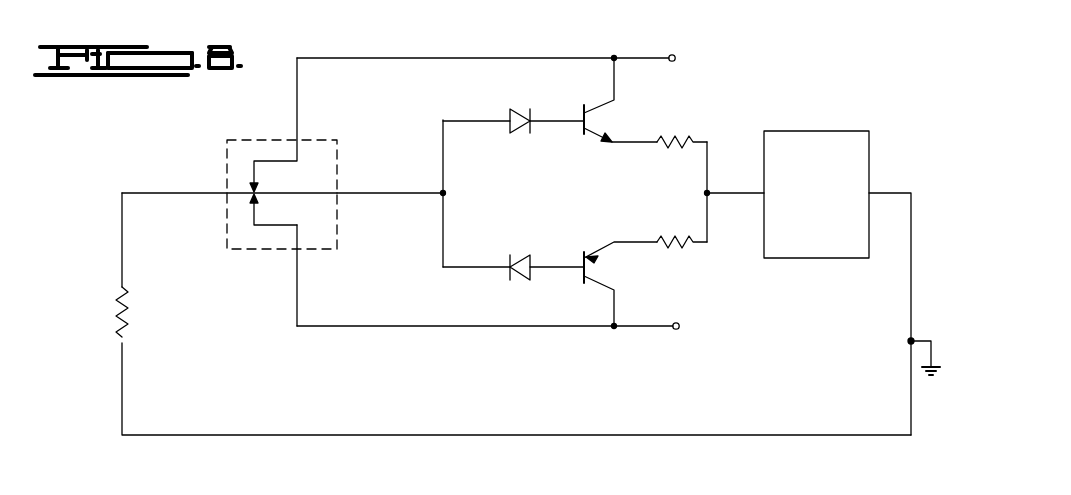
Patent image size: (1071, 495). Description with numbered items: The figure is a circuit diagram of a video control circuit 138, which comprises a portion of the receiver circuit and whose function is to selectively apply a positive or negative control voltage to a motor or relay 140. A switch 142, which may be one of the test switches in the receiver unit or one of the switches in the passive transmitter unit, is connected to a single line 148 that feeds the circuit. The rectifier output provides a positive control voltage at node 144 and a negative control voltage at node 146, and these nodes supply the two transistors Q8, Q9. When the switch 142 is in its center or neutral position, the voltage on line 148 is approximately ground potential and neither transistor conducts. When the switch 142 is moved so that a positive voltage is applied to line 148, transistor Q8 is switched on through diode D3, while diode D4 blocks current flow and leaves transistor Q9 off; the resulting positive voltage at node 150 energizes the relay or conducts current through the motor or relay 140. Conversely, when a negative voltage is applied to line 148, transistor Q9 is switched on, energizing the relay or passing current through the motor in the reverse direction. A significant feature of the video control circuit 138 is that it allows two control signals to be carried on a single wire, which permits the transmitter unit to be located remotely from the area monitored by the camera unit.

The video control circuit 138 is at (176, 163).
The motor or relay 140 is at (853, 130).
The switch 142 is at (236, 253).
The node 144 is at (671, 52).
The node 146 is at (672, 332).
The line 148 is at (378, 191).
The node 150 is at (705, 193).
The diode D3 is at (518, 110).
The diode D4 is at (523, 252).
The transistor Q8 is at (590, 117).
The transistor Q9 is at (597, 267).